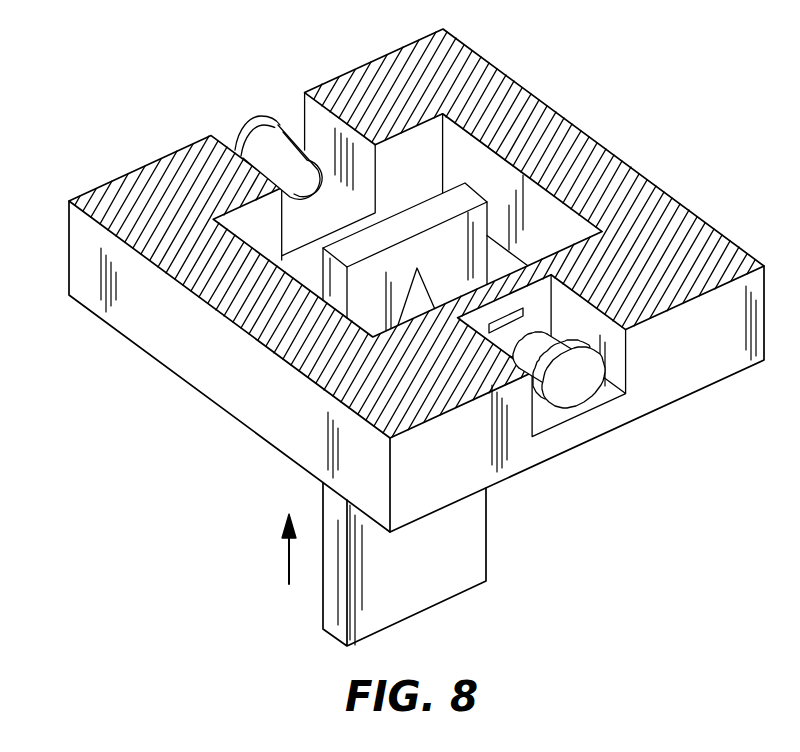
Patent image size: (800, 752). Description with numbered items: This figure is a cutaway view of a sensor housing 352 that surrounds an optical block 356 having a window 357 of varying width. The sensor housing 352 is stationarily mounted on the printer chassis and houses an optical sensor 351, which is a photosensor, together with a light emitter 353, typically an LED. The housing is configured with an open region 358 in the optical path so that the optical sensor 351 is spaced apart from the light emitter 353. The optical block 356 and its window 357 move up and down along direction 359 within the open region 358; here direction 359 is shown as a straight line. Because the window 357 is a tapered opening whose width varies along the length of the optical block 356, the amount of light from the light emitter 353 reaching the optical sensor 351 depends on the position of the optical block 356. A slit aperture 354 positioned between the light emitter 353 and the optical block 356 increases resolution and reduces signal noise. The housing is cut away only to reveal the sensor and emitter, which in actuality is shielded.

The optical sensor 351 is at (245, 128).
The sensor housing 352 is at (490, 62).
The light emitter 353 is at (582, 379).
The slit aperture 354 is at (524, 311).
The optical block 356 is at (487, 539).
The window 357 is at (410, 318).
The open region 358 is at (507, 262).
The direction 359 is at (286, 555).